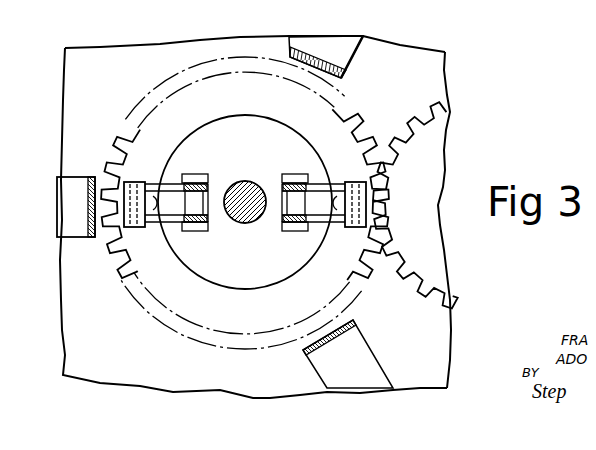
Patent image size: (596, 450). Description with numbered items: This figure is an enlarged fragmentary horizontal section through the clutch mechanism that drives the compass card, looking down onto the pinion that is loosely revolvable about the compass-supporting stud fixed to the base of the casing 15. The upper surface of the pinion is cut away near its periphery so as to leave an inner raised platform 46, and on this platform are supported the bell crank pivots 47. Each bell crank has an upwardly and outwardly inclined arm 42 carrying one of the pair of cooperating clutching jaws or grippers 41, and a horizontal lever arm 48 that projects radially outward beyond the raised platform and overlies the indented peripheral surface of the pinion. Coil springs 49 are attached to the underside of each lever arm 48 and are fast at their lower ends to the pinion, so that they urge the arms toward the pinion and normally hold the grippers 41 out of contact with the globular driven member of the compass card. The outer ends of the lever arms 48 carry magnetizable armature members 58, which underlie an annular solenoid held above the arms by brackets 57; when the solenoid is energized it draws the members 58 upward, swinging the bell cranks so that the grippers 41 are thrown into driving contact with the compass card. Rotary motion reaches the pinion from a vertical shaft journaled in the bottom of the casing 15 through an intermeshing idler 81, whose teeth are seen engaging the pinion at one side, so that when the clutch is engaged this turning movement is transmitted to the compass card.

The casing 15 is at (70, 348).
The clutching jaws or grippers 41 is at (240, 222).
The upwardly and outwardly inclined arms 42 is at (311, 186).
The inner raised platform 46 is at (289, 143).
The bell crank pivots 47 is at (284, 195).
The horizontal lever arms 48 is at (172, 182).
The coil springs 49 is at (151, 230).
The brackets 57 is at (66, 206).
The magnetizable armature members 58 is at (121, 226).
The intermeshing idler 81 is at (428, 220).